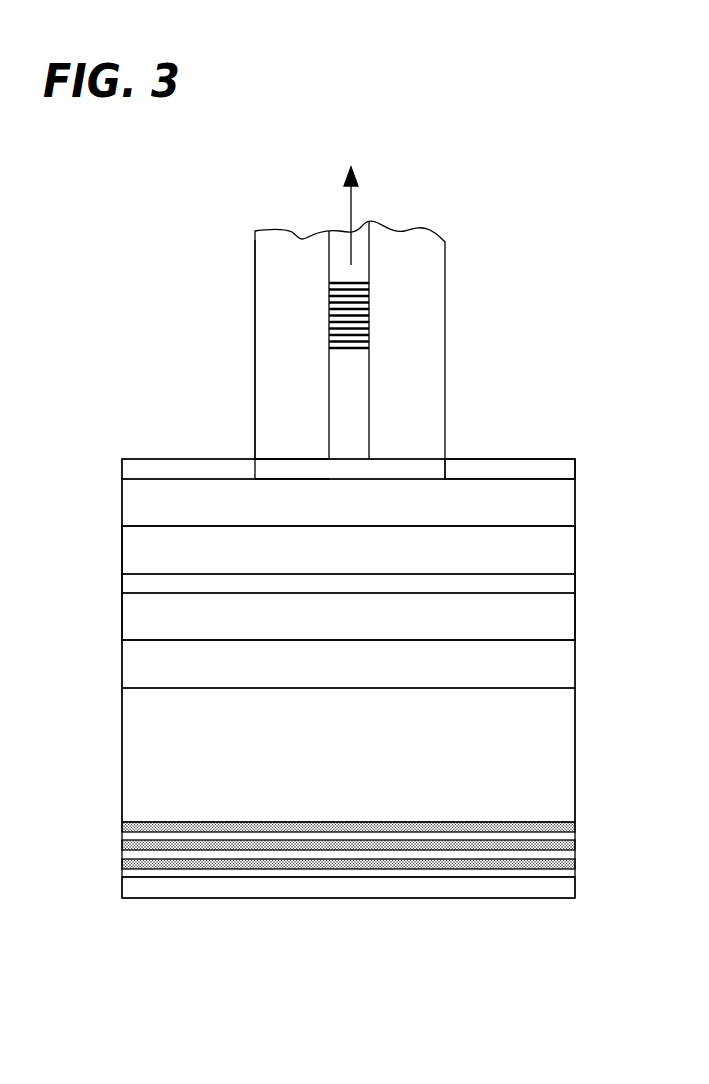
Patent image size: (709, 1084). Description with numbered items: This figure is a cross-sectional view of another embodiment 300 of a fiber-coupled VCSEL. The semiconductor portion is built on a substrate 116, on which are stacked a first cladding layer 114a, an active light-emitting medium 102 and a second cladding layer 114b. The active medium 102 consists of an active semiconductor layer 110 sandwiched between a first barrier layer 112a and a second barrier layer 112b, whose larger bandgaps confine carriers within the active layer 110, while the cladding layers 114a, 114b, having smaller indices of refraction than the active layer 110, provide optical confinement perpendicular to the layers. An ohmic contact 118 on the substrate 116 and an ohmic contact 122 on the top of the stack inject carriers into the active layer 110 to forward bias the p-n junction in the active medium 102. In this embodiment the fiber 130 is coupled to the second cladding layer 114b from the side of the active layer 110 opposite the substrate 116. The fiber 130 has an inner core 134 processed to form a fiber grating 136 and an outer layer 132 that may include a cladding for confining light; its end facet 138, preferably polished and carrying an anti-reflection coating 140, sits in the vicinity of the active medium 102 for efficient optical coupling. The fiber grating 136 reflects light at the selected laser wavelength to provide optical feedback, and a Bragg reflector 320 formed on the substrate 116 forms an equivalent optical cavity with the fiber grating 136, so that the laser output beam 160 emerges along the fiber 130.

The embodiment 300 is at (108, 214).
The active light-emitting medium 102 is at (122, 528).
The active semiconductor layer 110 is at (577, 585).
The first barrier layer 112a is at (577, 608).
The second barrier layer 112b is at (577, 545).
The first cladding layer 114a is at (577, 655).
The second cladding layer 114b is at (577, 508).
The substrate 116 is at (577, 718).
The ohmic contact 118 is at (577, 898).
The ohmic contact 122 is at (195, 458).
The fiber 130 is at (458, 303).
The outer layer 132 is at (256, 270).
The inner core 134 is at (370, 378).
The fiber grating 136 is at (370, 320).
The end facet 138 is at (309, 457).
The anti-reflection coating 140 is at (426, 470).
The output beam 160 is at (347, 208).
The Bragg reflector 320 is at (121, 822).